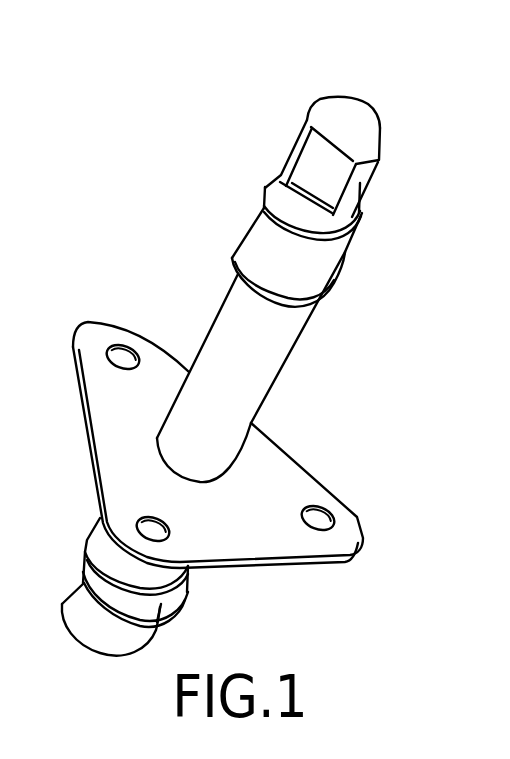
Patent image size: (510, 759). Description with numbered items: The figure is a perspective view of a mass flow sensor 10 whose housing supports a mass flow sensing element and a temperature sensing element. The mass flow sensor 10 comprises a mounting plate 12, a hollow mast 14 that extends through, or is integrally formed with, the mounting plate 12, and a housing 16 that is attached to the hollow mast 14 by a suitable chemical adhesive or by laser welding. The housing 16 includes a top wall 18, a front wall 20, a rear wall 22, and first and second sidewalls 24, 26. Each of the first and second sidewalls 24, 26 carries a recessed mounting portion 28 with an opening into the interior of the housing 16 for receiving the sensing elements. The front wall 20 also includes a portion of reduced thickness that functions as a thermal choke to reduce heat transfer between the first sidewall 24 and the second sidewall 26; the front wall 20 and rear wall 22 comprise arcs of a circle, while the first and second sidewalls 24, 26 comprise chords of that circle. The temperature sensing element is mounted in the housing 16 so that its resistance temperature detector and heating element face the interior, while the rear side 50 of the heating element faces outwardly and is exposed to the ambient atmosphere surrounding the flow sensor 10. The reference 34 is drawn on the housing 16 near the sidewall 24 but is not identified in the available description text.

The mass flow sensor 10 is at (108, 260).
The mounting plate 12 is at (303, 482).
The hollow mast 14 is at (268, 356).
The housing 16 is at (349, 236).
The top wall 18 is at (340, 118).
The front wall 20 is at (364, 171).
The rear wall 22 is at (315, 99).
The first sidewall 24 is at (265, 196).
The second sidewall 26 is at (358, 208).
The recessed mounting portion 28 is at (283, 180).
The slot wall 34 is at (303, 130).
The rear side of heating element 50 is at (306, 155).